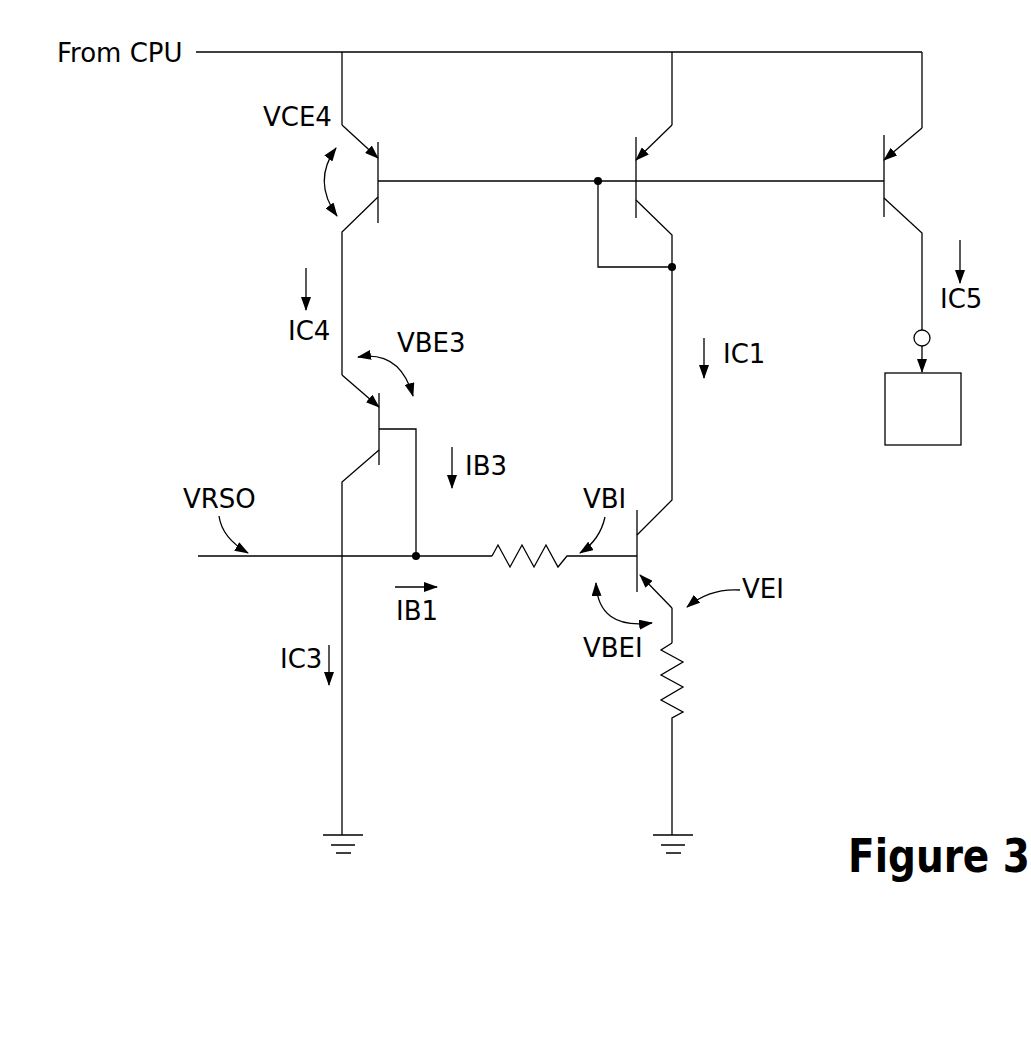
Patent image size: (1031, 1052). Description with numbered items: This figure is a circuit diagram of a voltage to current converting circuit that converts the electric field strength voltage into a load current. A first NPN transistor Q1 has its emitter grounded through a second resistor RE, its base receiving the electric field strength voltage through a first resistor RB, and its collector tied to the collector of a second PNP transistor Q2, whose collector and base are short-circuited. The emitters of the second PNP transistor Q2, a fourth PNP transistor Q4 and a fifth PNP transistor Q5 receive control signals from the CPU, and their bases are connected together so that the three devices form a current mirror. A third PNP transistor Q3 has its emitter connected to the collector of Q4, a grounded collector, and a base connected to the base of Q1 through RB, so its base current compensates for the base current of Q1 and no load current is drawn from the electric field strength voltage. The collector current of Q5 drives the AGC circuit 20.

The AGC circuit 20 is at (962, 388).
The first NPN transistor Q1 is at (677, 455).
The second PNP transistor Q2 is at (659, 161).
The third PNP transistor Q3 is at (356, 605).
The fourth PNP transistor Q4 is at (316, 213).
The fifth PNP transistor Q5 is at (922, 191).
The first resistor RB is at (564, 536).
The second resistor RE is at (700, 739).